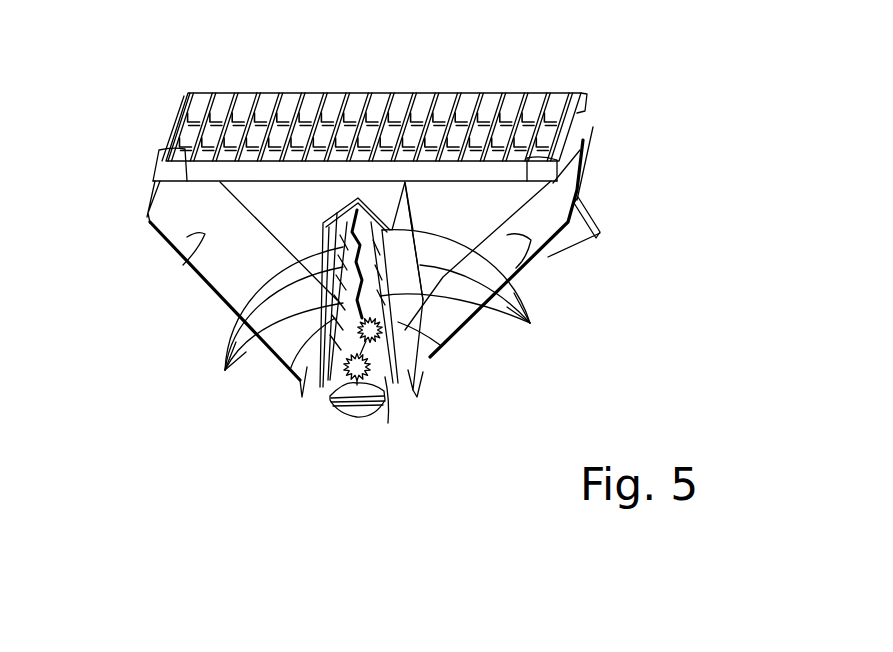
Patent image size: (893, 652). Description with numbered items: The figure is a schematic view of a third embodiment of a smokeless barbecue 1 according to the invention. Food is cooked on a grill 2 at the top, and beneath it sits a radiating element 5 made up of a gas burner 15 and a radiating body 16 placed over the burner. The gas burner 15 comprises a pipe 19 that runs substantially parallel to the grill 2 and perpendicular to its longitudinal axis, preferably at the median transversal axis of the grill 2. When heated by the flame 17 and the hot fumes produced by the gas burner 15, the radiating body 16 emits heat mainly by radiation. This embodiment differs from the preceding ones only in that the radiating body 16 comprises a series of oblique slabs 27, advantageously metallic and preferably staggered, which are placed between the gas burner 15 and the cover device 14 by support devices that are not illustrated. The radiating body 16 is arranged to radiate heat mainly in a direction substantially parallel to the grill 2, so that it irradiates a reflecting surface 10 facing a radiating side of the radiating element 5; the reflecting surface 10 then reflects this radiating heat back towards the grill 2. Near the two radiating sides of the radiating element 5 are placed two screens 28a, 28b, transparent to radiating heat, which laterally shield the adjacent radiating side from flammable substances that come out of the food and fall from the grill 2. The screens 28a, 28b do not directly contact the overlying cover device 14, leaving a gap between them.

The smokeless barbecue 1 is at (610, 108).
The grill 2 is at (373, 93).
The radiating element 5 is at (420, 213).
The reflecting surface 10 is at (205, 234).
The cover device 14 is at (338, 212).
The gas burner 15 is at (333, 412).
The radiating body 16 is at (349, 246).
The flame 17 is at (363, 393).
The pipe 19 is at (388, 385).
The oblique slabs 27 is at (375, 317).
The screen 28a is at (440, 345).
The screen 28b is at (290, 370).